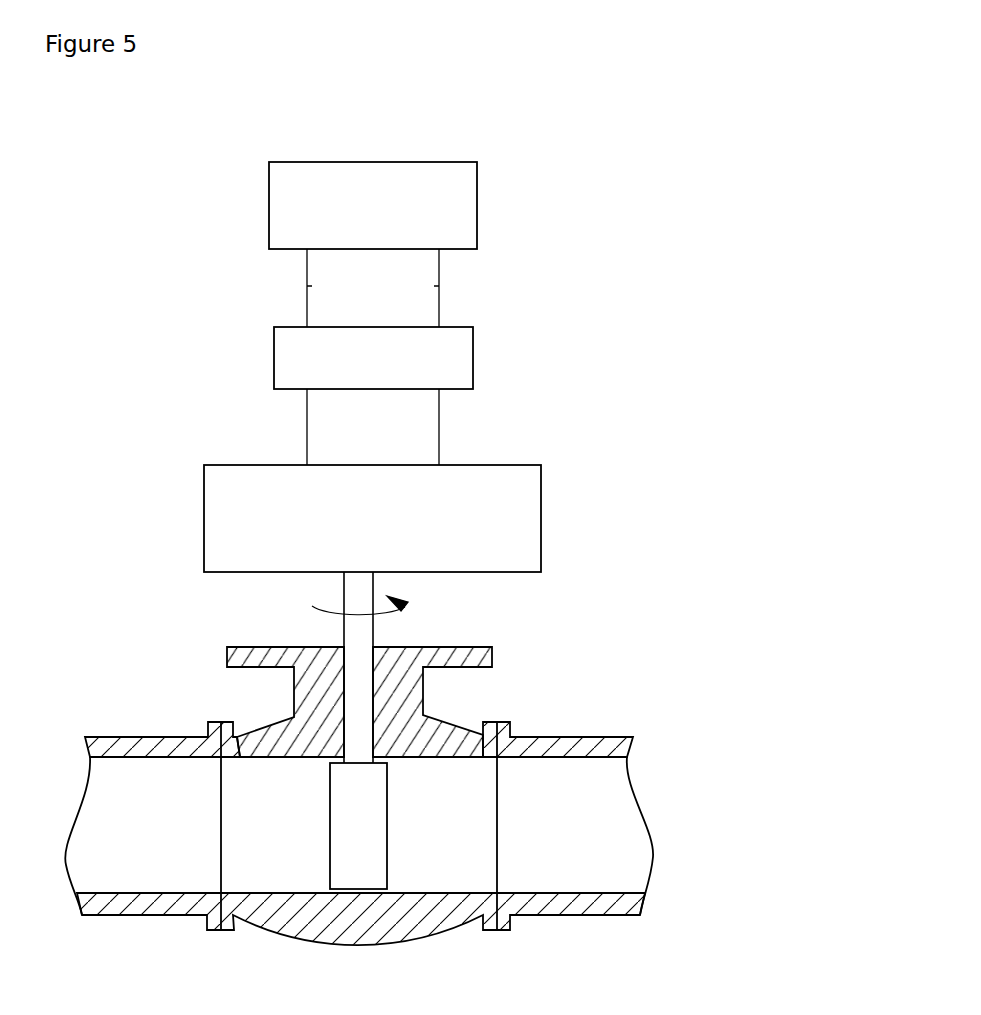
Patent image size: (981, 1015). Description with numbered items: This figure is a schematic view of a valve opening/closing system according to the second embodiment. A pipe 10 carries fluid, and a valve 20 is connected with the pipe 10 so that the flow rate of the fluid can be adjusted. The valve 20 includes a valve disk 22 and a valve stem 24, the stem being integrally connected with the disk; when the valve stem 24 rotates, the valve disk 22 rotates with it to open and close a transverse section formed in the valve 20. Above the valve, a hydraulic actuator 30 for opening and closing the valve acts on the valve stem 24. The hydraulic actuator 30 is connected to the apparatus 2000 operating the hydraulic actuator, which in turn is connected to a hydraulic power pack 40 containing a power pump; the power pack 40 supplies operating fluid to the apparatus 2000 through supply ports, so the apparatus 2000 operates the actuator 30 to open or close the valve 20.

The hydraulic power pack 40 is at (492, 153).
The apparatus operating the hydraulic actuator for opening/closing the valve 2000 is at (489, 318).
The hydraulic actuator 30 is at (557, 455).
The valve stem 24 is at (343, 617).
The valve 20 is at (514, 646).
The pipe 10 is at (655, 725).
The valve disk 22 is at (387, 828).